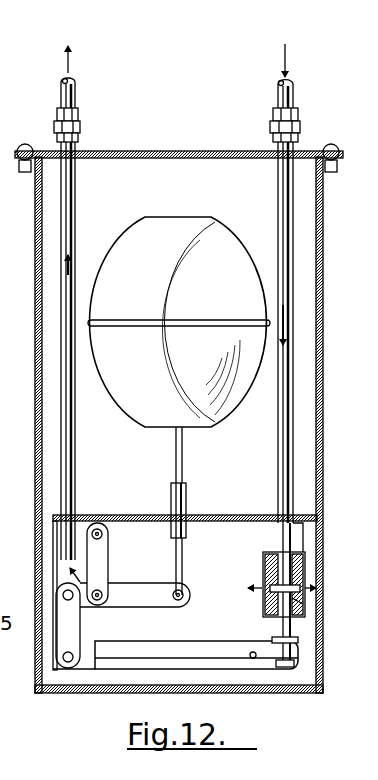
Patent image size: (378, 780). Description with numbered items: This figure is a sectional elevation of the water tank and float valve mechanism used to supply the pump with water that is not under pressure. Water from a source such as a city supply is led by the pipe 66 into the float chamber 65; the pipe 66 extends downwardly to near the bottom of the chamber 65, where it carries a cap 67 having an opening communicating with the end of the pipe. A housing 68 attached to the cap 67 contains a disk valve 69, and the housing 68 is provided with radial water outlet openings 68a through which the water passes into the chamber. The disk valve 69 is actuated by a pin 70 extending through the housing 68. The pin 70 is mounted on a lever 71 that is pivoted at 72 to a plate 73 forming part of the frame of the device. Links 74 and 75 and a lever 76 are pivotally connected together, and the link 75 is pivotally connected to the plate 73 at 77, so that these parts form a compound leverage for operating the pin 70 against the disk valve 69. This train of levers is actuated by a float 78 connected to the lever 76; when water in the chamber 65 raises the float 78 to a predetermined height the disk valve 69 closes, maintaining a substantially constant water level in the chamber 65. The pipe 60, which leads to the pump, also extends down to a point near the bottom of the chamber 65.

The pipe 60 is at (62, 97).
The float chamber 65 is at (179, 418).
The pipe 66 is at (278, 100).
The cap 67 is at (265, 572).
The housing 68 is at (270, 608).
The radial water outlet openings 68a is at (308, 590).
The disk valve 69 is at (298, 600).
The pin 70 is at (283, 628).
The lever 71 is at (203, 658).
The pivot 72 is at (256, 658).
The plate 73 is at (213, 538).
The link 74 is at (63, 627).
The link 75 is at (100, 560).
The lever 76 is at (137, 590).
The pivot 77 is at (97, 530).
The float 78 is at (179, 406).